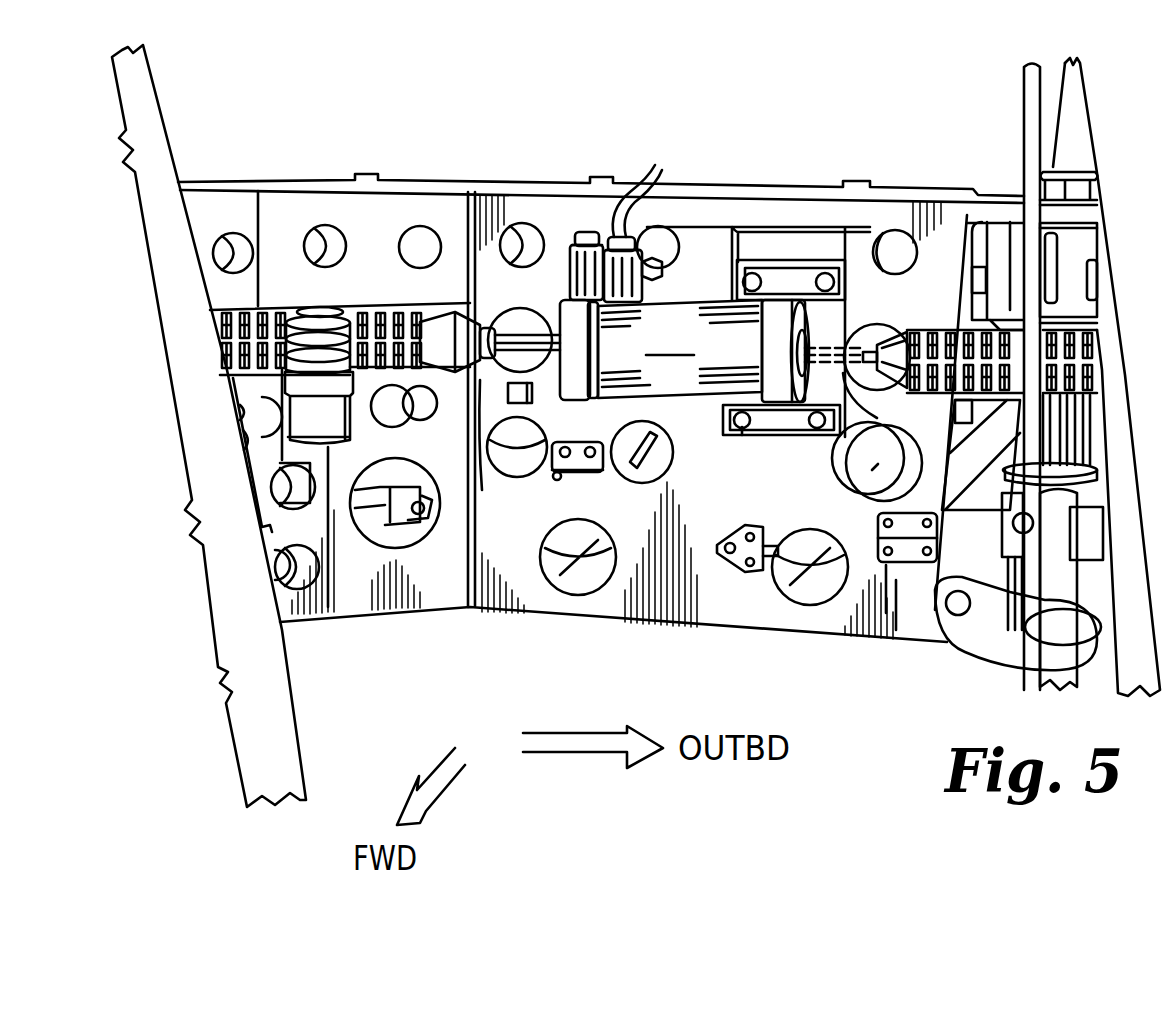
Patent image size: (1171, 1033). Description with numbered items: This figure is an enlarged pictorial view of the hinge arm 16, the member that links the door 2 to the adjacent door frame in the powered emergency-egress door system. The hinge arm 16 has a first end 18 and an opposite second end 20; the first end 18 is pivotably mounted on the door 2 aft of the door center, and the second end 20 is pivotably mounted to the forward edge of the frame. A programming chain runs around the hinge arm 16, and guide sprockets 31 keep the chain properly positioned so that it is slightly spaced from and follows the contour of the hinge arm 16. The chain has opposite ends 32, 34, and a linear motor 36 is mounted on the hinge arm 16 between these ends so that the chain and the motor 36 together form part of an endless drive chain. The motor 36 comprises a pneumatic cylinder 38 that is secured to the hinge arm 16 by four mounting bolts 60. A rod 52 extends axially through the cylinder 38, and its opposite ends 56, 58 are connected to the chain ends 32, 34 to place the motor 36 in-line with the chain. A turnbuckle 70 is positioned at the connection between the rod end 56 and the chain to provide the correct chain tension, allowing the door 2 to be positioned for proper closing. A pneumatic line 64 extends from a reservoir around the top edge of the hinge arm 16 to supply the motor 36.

The door 2 is at (233, 605).
The hinge arm 16 is at (486, 140).
The first end of hinge arm 18 is at (967, 580).
The second end of hinge arm 20 is at (200, 198).
The guide sprockets 31 is at (326, 320).
The chain end 32 is at (423, 368).
The chain end 34 is at (913, 335).
The linear motor 36 is at (696, 270).
The pneumatic cylinder 38 is at (670, 337).
The rod 52 is at (823, 360).
The rod end 56 is at (480, 400).
The rod end 58 is at (872, 470).
The mounting bolts 60 is at (748, 425).
The pneumatic line 64 is at (628, 180).
The turnbuckle 70 is at (470, 323).